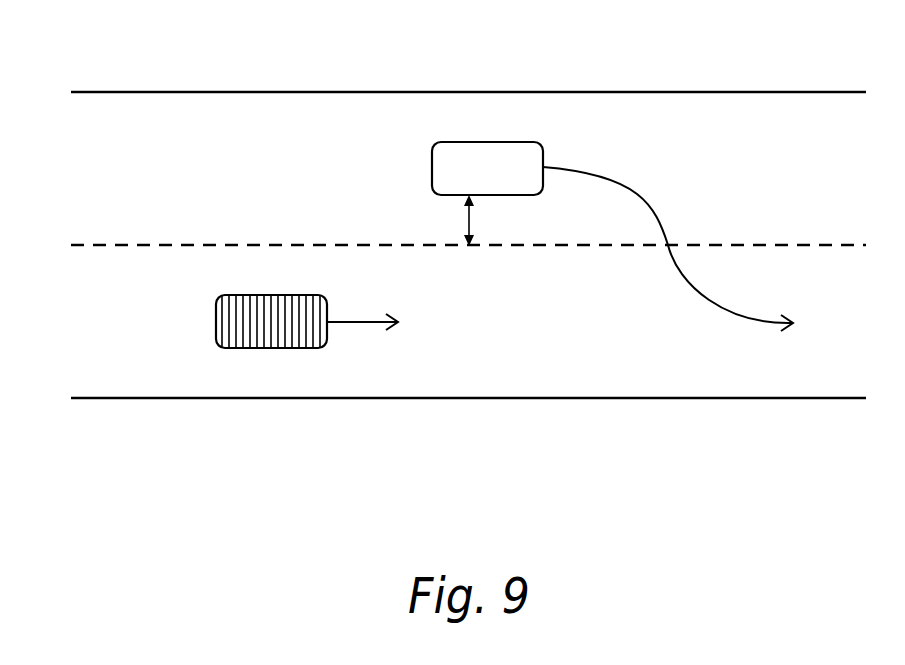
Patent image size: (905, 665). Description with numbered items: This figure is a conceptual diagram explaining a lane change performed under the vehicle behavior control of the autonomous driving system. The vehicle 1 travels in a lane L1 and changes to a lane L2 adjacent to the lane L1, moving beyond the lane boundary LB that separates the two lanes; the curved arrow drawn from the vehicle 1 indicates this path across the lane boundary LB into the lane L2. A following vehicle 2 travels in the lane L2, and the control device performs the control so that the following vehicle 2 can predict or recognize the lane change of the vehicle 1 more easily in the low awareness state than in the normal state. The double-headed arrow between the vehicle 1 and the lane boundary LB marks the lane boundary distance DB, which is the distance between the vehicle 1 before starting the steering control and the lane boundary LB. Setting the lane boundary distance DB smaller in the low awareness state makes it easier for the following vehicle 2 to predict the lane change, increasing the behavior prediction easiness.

The vehicle 1 is at (480, 142).
The following vehicle 2 is at (262, 295).
The lane boundary distance DB is at (491, 220).
The lane L1 is at (109, 168).
The lane L2 is at (109, 322).
The lane boundary LB is at (448, 245).